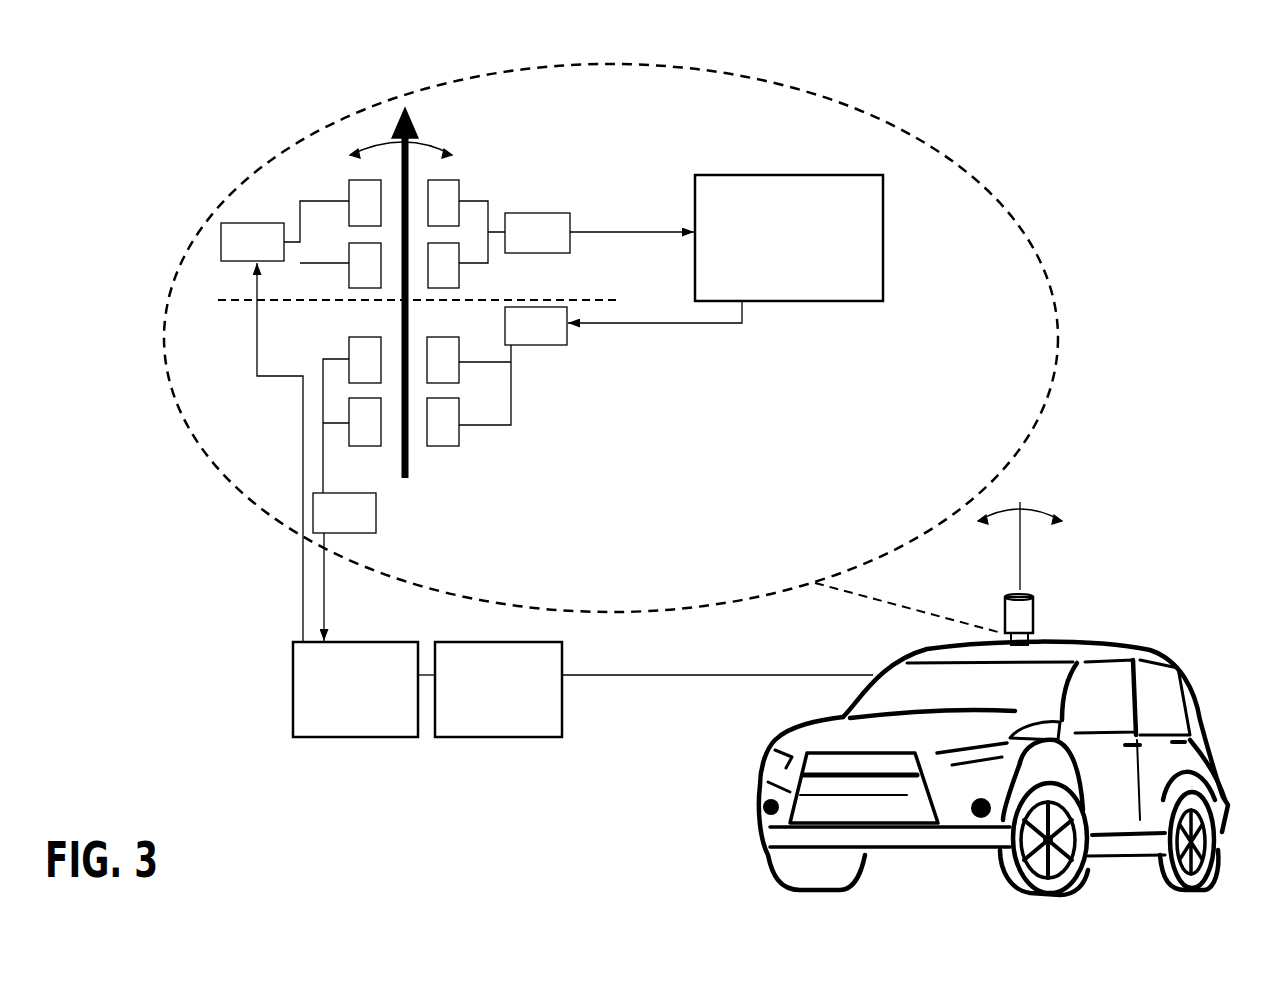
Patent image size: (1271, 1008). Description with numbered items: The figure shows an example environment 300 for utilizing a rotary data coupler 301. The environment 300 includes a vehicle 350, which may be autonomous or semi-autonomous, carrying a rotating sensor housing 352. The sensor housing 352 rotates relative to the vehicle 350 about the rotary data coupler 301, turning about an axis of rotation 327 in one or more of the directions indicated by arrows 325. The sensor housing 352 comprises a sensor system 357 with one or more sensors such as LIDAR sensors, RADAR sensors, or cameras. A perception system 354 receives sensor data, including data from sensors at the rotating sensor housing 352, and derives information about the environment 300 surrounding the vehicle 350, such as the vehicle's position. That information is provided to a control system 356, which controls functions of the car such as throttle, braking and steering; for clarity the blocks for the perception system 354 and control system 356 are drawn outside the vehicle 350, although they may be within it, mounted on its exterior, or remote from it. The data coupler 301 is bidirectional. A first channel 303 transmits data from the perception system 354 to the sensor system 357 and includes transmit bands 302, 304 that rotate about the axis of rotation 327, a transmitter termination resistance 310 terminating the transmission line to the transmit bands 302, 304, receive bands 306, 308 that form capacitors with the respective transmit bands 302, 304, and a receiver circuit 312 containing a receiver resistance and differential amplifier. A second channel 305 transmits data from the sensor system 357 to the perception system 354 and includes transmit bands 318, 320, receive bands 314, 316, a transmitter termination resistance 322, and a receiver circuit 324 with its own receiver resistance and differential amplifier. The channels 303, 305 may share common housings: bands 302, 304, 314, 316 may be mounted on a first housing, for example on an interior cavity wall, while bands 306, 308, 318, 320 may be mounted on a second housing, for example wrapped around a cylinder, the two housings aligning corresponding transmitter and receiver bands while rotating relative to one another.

The environment 300 is at (1185, 132).
The rotary data coupler 301 is at (583, 160).
The transmit band 302 is at (355, 180).
The first channel 303 is at (243, 205).
The transmit band 304 is at (362, 243).
The second channel 305 is at (247, 478).
The receive band 306 is at (462, 185).
The receive band 308 is at (460, 270).
The transmitter termination resistance 310 is at (246, 262).
The receiver circuit 312 is at (545, 255).
The receive band 314 is at (352, 338).
The receive band 316 is at (378, 447).
The transmit band 318 is at (455, 338).
The transmit band 320 is at (460, 433).
The transmitter termination resistance 322 is at (535, 345).
The receiver circuit 324 is at (378, 515).
The arrows 325 is at (452, 150).
The axis of rotation 327 is at (410, 475).
The vehicle 350 is at (1137, 652).
The rotating sensor housing 352 is at (884, 152).
The perception system 354 is at (293, 690).
The control system 356 is at (505, 738).
The sensor system 357 is at (883, 195).